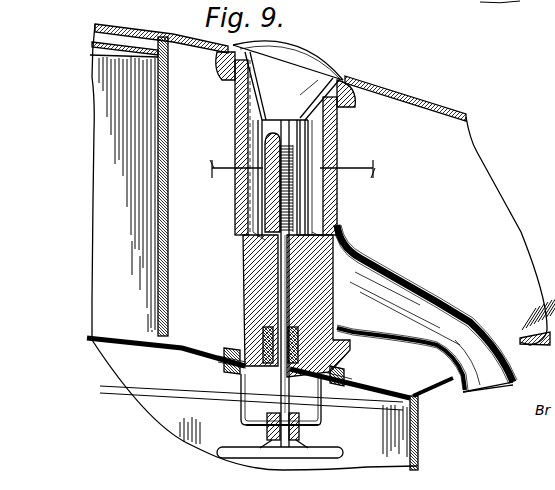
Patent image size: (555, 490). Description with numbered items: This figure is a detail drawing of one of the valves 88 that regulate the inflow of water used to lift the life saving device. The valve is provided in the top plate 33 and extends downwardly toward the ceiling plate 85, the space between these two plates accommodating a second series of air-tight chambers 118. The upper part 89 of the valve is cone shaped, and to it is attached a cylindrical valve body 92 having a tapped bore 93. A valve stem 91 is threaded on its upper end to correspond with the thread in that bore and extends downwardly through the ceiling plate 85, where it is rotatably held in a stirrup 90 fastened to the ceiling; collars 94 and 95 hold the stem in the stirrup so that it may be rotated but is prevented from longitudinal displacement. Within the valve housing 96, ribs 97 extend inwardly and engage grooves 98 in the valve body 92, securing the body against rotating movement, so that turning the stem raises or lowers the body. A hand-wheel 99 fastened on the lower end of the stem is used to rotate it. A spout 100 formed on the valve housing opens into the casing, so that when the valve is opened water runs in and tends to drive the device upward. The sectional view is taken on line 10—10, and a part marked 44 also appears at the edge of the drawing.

The top plate 33 is at (408, 97).
The air-tight chambers 118 is at (127, 208).
The valve housing 96 is at (240, 142).
The upper part of the valve 89 is at (328, 77).
The ribs 97 is at (257, 182).
The valves 88 is at (307, 152).
The grooves 98 is at (262, 207).
The tapped bore 93 is at (280, 232).
The valve body 92 is at (317, 226).
The valve stem 91 is at (282, 292).
The section line 10— 10 is at (296, 172).
The ceiling plate 85 is at (364, 390).
The spout 100 is at (478, 383).
The collar 94 is at (243, 416).
The stirrup 90 is at (317, 423).
The collar 95 is at (267, 433).
The hand-wheel 99 is at (205, 455).
The part 44 is at (458, 0).